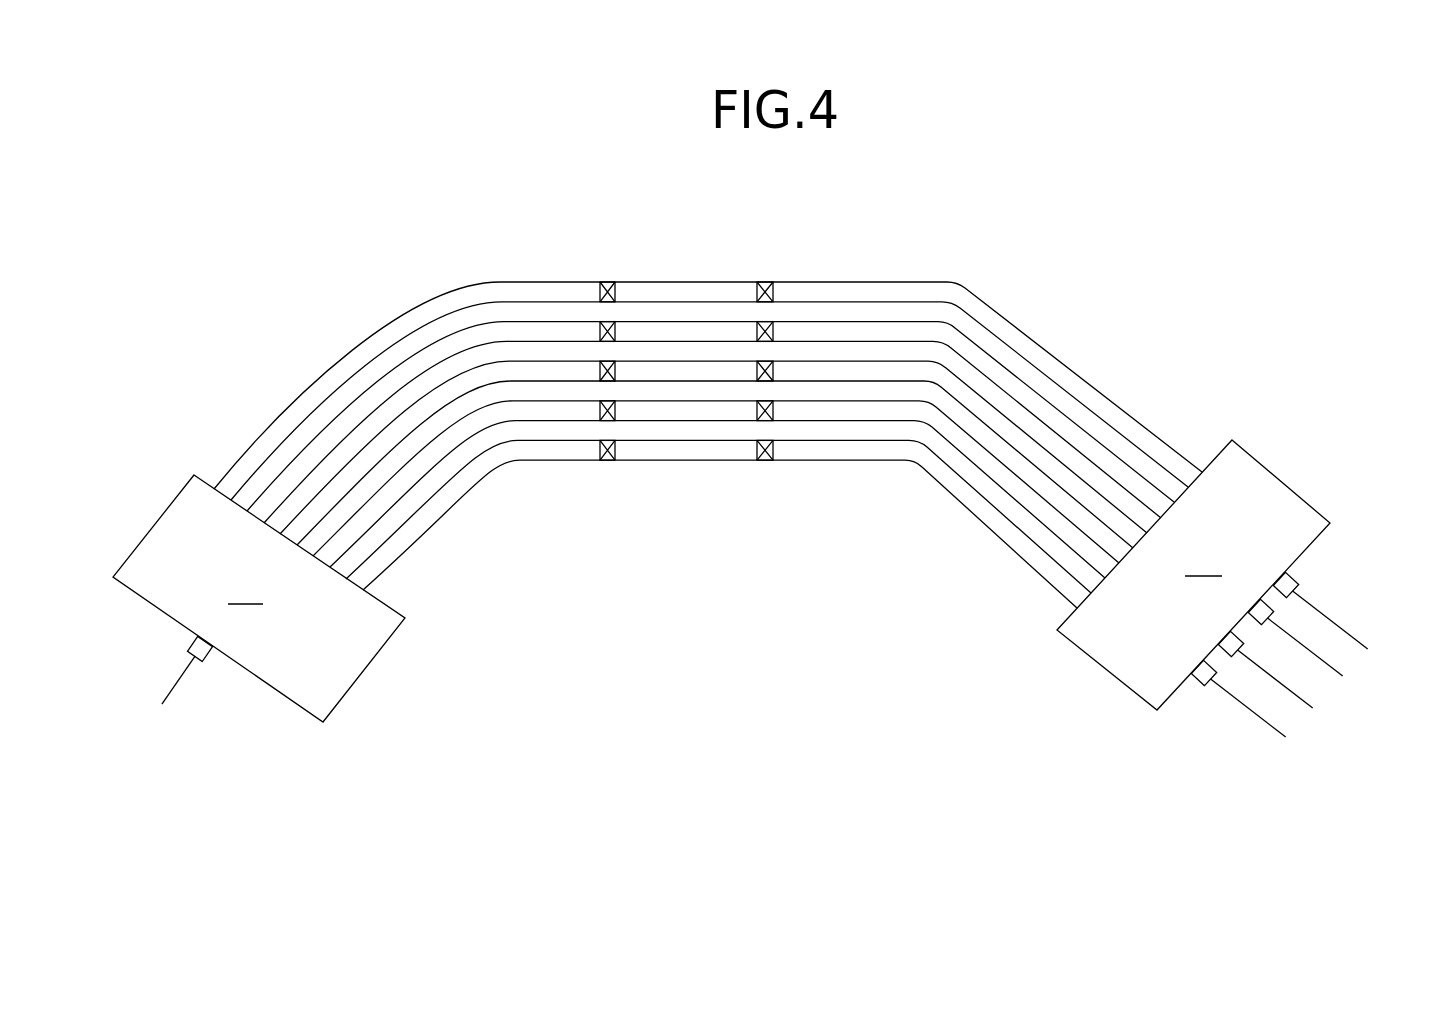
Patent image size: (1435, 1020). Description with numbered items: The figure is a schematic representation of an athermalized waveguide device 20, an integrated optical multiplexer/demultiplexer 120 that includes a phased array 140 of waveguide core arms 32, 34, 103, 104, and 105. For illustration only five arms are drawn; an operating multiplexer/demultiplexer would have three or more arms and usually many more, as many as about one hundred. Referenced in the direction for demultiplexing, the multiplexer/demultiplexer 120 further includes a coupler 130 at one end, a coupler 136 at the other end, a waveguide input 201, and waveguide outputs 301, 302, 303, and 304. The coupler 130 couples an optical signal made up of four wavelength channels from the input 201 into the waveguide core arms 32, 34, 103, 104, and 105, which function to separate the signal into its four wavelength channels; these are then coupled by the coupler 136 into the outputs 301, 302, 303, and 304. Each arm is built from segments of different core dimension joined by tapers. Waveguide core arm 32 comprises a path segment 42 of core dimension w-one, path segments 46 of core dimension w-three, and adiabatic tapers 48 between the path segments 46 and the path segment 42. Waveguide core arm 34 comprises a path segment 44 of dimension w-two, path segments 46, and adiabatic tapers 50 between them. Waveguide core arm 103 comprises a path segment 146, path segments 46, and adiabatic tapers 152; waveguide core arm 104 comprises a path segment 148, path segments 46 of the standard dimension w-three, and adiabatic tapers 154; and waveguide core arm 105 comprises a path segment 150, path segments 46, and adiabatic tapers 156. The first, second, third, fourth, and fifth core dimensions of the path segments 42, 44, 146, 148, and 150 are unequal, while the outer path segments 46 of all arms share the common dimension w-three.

The athermalized waveguide device 20 is at (288, 175).
The phased array 140 is at (427, 267).
The path segments 46 is at (507, 273).
The path segment 150 is at (733, 309).
The path segment 148 is at (725, 349).
The path segment 146 is at (702, 389).
The path segment 44 is at (665, 429).
The path segment 42 is at (648, 470).
The waveguide core arm 105 is at (358, 337).
The multiplexer/demultiplexer 120 is at (1222, 268).
The waveguide core arm 104 is at (349, 446).
The waveguide core arm 103 is at (408, 459).
The waveguide core arm 34 is at (460, 471).
The waveguide core arm 32 is at (503, 490).
The adiabatic tapers 156 is at (600, 287).
The adiabatic tapers 154 is at (600, 378).
The adiabatic tapers 152 is at (600, 370).
The adiabatic tapers 50 is at (600, 420).
The adiabatic tapers 48 is at (600, 458).
The coupler 130 is at (259, 645).
The waveguide input 201 is at (210, 667).
The coupler 136 is at (1243, 588).
The waveguide output 304 is at (1310, 585).
The waveguide output 303 is at (1285, 613).
The waveguide output 302 is at (1256, 648).
The waveguide output 301 is at (1231, 677).